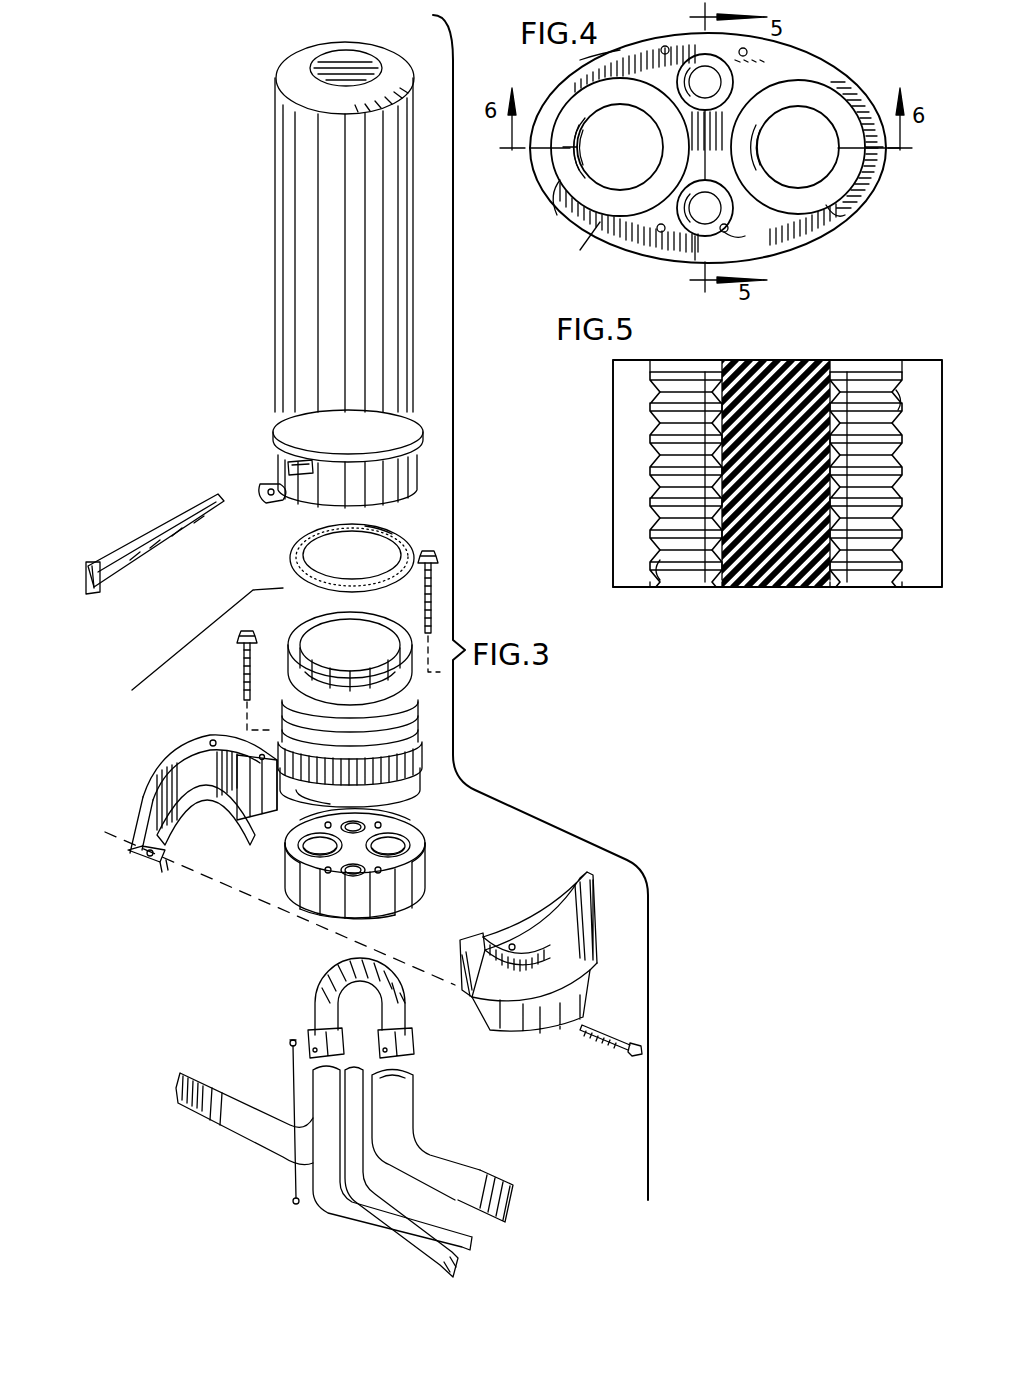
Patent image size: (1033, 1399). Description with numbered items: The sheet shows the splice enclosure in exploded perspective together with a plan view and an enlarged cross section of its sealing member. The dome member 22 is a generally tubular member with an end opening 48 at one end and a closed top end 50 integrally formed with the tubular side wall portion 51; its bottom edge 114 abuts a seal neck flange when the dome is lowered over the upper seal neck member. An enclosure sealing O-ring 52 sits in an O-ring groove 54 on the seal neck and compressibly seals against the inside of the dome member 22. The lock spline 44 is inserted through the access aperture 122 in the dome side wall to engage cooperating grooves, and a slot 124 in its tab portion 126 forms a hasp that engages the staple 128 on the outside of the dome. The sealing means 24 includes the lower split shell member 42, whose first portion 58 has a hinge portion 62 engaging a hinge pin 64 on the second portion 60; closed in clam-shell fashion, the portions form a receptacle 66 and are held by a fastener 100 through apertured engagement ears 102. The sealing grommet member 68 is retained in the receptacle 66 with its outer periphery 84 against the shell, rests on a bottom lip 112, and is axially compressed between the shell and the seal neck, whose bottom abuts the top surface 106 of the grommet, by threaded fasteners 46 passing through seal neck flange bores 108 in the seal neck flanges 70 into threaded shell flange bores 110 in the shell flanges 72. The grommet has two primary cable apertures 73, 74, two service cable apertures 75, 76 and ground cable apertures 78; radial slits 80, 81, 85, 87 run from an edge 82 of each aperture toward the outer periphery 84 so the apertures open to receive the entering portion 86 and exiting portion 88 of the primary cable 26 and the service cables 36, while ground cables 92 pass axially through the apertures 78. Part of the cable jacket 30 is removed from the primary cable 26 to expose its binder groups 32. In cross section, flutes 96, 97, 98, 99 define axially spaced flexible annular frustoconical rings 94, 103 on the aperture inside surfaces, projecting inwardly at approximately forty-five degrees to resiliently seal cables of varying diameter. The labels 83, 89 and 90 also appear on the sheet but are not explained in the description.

In FIG. 3, the dome member 22 is at (303, 291).
In FIG. 3, the sealing means 24 is at (190, 639).
In FIG. 3, the primary cable 26 is at (353, 1117).
In FIG. 3, the cable jacket 30 is at (414, 1040).
In FIG. 3, the binder groups 32 is at (318, 992).
In FIG. 3, the service cables 36 is at (390, 1240).
In FIG. 3, the lower split shell member 42 is at (184, 772).
In FIG. 3, the lock spline 44 is at (154, 552).
In FIG. 3, the threaded fasteners 46 is at (430, 552).
In FIG. 3, the end opening 48 is at (306, 510).
In FIG. 3, the closed top end 50 is at (292, 75).
In FIG. 3, the tubular side wall portion 51 is at (295, 283).
In FIG. 3, the enclosure sealing O-ring 52 is at (290, 562).
In FIG. 3, the O-ring groove 54 is at (288, 642).
In FIG. 3, the first portion 58 is at (142, 798).
In FIG. 3, the second portion 60 is at (547, 940).
In FIG. 3, the hinge portion 62 is at (262, 824).
In FIG. 3, the hinge pin 64 is at (618, 948).
In FIG. 3, the receptacle 66 is at (165, 768).
In FIG. 3, the sealing grommet member 68 is at (362, 848).
In FIG. 4, the sealing grommet member 68 is at (705, 157).
In FIG. 5, the sealing grommet member 68 is at (764, 480).
In FIG. 3, the seal neck flanges 70 is at (296, 788).
In FIG. 3, the shell flanges 72 is at (175, 750).
In FIG. 3, the primary cable aperture 73 is at (300, 858).
In FIG. 4, the primary cable aperture 73 is at (602, 130).
In FIG. 3, the primary cable aperture 74 is at (400, 838).
In FIG. 4, the primary cable aperture 74 is at (808, 118).
In FIG. 3, the service cable aperture 75 is at (353, 820).
In FIG. 4, the service cable aperture 75 is at (700, 52).
In FIG. 5, the service cable aperture 75 is at (700, 592).
In FIG. 3, the service cable aperture 76 is at (365, 876).
In FIG. 4, the service cable aperture 76 is at (692, 236).
In FIG. 5, the service cable aperture 76 is at (855, 594).
In FIG. 3, the ground cable apertures 78 is at (328, 822).
In FIG. 4, the ground cable apertures 78 is at (663, 46).
In FIG. 3, the radial slit 80 is at (292, 845).
In FIG. 4, the radial slit 80 is at (554, 160).
In FIG. 3, the radial slit 81 is at (428, 866).
In FIG. 4, the radial slit 81 is at (866, 172).
In FIG. 4, the edge 82 is at (700, 96).
In FIG. 5, the edge 82 is at (686, 477).
In FIG. 4, the right threaded bore 83 is at (722, 188).
In FIG. 5, the right threaded bore 83 is at (866, 477).
In FIG. 3, the outer periphery 84 is at (320, 895).
In FIG. 5, the outer periphery 84 is at (622, 513).
In FIG. 3, the radial slit 85 is at (360, 880).
In FIG. 4, the radial slit 85 is at (702, 258).
In FIG. 5, the radial slit 85 is at (922, 585).
In FIG. 3, the entering portion 86 is at (496, 1185).
In FIG. 3, the radial slit 87 is at (365, 820).
In FIG. 4, the radial slit 87 is at (718, 64).
In FIG. 5, the radial slit 87 is at (628, 463).
In FIG. 3, the exiting portion 88 is at (240, 1100).
In FIG. 4, the peripheral rim 89 is at (604, 58).
In FIG. 3, the return tube 90 is at (315, 1090).
In FIG. 3, the ground cables 92 is at (290, 1180).
In FIG. 4, the flexible annular frustoconical rings 94 is at (580, 232).
In FIG. 4, the flute 96 is at (556, 200).
In FIG. 4, the flute 97 is at (850, 218).
In FIG. 4, the flute 98 is at (680, 102).
In FIG. 5, the flute 98 is at (706, 370).
In FIG. 4, the flute 99 is at (730, 232).
In FIG. 5, the flute 99 is at (862, 372).
In FIG. 3, the fastener 100 is at (616, 1052).
In FIG. 3, the engagement ears 102 is at (158, 872).
In FIG. 5, the flexible annular frustoconical rings 103 is at (902, 395).
In FIG. 4, the top surface 106 is at (734, 137).
In FIG. 5, the top surface 106 is at (805, 360).
In FIG. 3, the seal neck flange bores 108 is at (262, 753).
In FIG. 3, the shell flange bores 110 is at (210, 740).
In FIG. 3, the bottom lip 112 is at (211, 800).
In FIG. 3, the bottom edge 114 is at (392, 524).
In FIG. 3, the access aperture 122 is at (292, 462).
In FIG. 3, the slot 124 is at (108, 590).
In FIG. 3, the tab portion 126 is at (122, 558).
In FIG. 3, the staple 128 is at (270, 485).